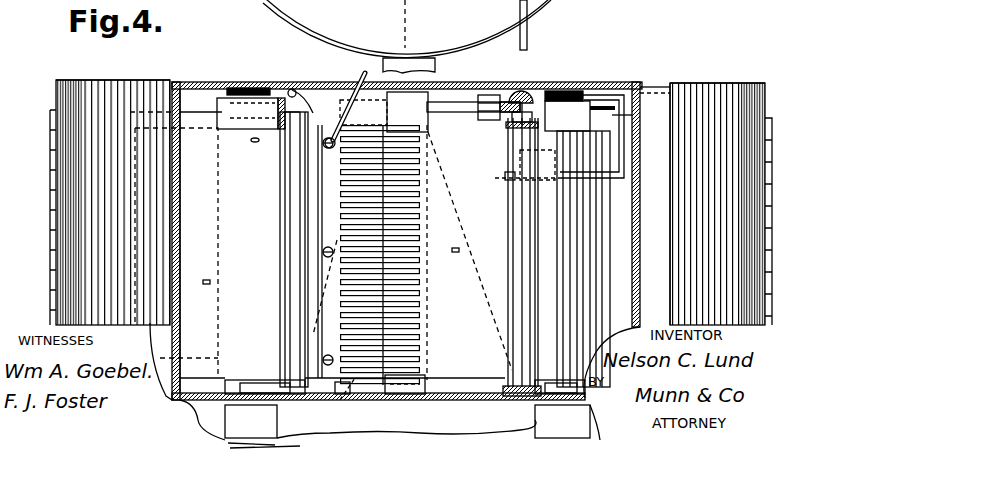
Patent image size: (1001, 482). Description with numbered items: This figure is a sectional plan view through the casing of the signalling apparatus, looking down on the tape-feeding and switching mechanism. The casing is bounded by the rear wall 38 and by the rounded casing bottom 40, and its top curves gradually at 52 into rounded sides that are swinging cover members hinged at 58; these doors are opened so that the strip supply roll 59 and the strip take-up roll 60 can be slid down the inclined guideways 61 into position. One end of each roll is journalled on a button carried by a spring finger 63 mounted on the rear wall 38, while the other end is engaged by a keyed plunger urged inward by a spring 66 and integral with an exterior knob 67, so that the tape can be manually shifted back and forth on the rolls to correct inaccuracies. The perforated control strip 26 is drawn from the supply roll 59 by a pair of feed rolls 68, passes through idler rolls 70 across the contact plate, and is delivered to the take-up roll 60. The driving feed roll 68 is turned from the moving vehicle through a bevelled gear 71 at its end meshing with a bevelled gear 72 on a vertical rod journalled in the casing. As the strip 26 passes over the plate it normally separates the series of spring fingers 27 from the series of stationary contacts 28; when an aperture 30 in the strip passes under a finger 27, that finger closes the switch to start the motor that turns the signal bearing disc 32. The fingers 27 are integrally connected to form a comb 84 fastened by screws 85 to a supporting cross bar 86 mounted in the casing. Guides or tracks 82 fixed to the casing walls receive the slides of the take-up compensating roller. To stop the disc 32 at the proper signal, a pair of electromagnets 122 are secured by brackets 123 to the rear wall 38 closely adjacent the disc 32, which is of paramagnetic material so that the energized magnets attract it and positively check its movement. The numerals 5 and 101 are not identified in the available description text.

The lamp housing center line 5 is at (412, 25).
The perforated control strip 26 is at (400, 257).
The spring fingers 27 is at (420, 177).
The stationary contacts 28 is at (406, 400).
The aperture 30 is at (205, 280).
The signal bearing disc 32 is at (505, 105).
The rear wall 38 is at (528, 90).
The rounded casing bottom 40 is at (499, 42).
The rounded casing top sides 52 is at (124, 84).
The hinge 58 is at (52, 222).
The strip supply roll 59 is at (222, 112).
The strip take-up roll 60 is at (600, 125).
The inclined guideways 61 is at (190, 92).
The spring finger 63 is at (238, 96).
The spring 66 is at (252, 385).
The knob 67 is at (412, 422).
The feed rolls 68 is at (510, 232).
The idler rolls 70 is at (285, 241).
The bevelled gear 71 is at (514, 116).
The bevelled gear 72 is at (518, 92).
The guides or tracks 82 is at (446, 66).
The comb 84 is at (320, 175).
The screws 85 is at (328, 247).
The supporting cross bar 86 is at (343, 400).
The lever 101 is at (363, 115).
The electromagnets 122 is at (515, 160).
The brackets 123 is at (620, 95).